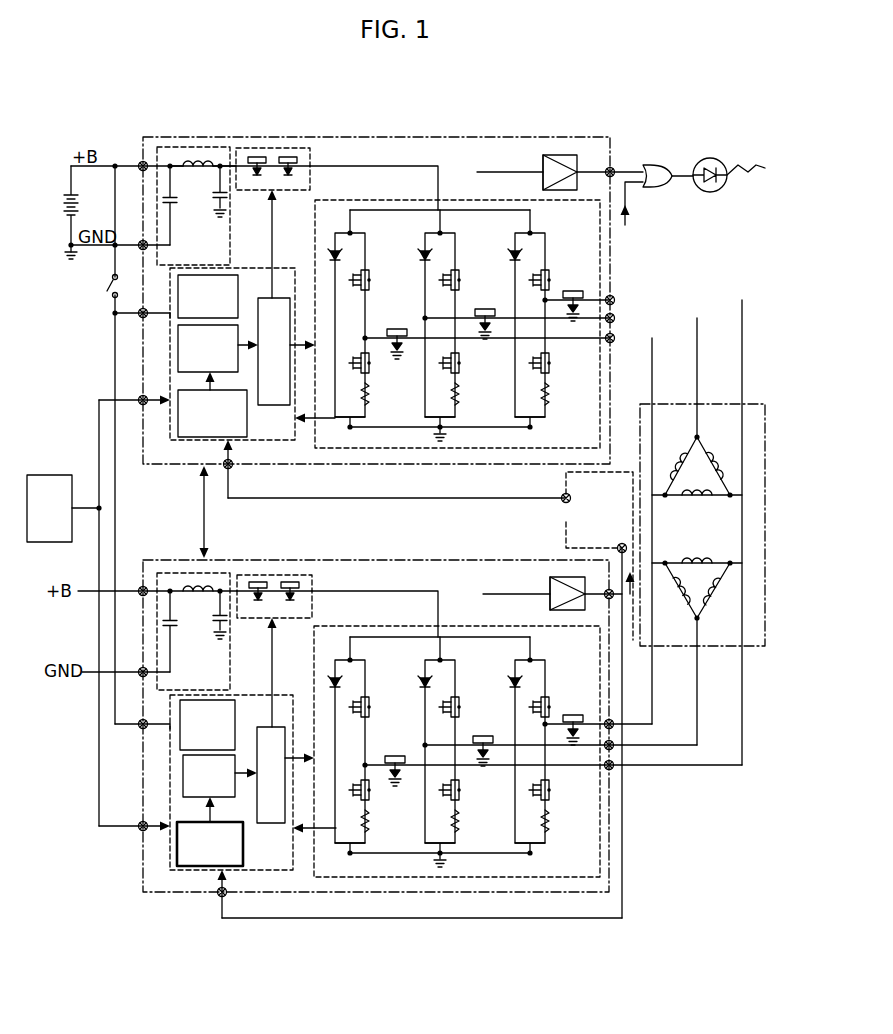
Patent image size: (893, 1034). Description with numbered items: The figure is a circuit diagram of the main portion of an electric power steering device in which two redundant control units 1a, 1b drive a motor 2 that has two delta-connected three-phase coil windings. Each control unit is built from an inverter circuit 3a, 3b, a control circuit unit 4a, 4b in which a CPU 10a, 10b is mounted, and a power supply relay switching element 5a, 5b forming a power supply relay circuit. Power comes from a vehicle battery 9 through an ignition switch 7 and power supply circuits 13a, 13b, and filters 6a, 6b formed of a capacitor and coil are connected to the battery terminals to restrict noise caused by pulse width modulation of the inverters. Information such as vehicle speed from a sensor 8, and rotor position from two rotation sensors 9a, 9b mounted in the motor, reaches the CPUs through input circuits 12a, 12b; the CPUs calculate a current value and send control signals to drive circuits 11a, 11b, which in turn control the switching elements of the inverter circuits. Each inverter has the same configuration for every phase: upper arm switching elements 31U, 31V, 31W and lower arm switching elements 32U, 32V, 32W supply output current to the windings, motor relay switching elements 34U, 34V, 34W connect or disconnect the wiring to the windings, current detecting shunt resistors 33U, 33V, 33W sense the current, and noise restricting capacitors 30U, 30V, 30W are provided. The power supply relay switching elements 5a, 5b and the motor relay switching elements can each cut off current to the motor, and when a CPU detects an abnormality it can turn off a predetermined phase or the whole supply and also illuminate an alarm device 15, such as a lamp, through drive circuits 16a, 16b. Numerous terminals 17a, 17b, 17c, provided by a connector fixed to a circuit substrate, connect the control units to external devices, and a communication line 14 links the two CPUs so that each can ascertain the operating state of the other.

The control unit 1a is at (452, 136).
The control unit 1b is at (498, 893).
The motor 2 is at (718, 403).
The inverter circuit 3a is at (335, 452).
The inverter circuit 3b is at (456, 626).
The control circuit unit 4a is at (198, 353).
The control circuit unit 4b is at (194, 801).
The power supply relay switching element 5a is at (268, 148).
The power supply relay switching element 5b is at (262, 574).
The filter 6a is at (200, 146).
The filter 6b is at (157, 618).
The ignition switch 7 is at (110, 285).
The sensor 8 is at (40, 543).
The battery 9 is at (68, 193).
The rotation sensor 9a is at (566, 472).
The rotation sensor 9b is at (566, 522).
The central processing unit 10a is at (178, 333).
The central processing unit 10b is at (183, 757).
The drive circuit 11a is at (263, 407).
The drive circuit 11b is at (272, 825).
The input circuit 12a is at (175, 428).
The input circuit 12b is at (175, 848).
The power supply circuit 13a is at (237, 266).
The power supply circuit 13b is at (238, 694).
The communication line 14 is at (204, 515).
The alarm device 15 is at (714, 158).
The drive circuit 16a is at (560, 154).
The drive circuit 16b is at (556, 577).
The terminal 17a is at (140, 162).
The terminal 17b is at (138, 832).
The terminal 17c is at (614, 168).
The noise restricting capacitor 30U is at (336, 250).
The noise restricting capacitor 30V is at (438, 222).
The noise restricting capacitor 30W is at (529, 225).
The upper arm switching element 31U is at (340, 258).
The upper arm switching element 31V is at (430, 258).
The upper arm switching element 31W is at (520, 258).
The lower arm switching element 32U is at (368, 392).
The lower arm switching element 32V is at (458, 387).
The lower arm switching element 32W is at (548, 392).
The current detecting shunt resistor 33U is at (352, 420).
The current detecting shunt resistor 33V is at (442, 422).
The current detecting shunt resistor 33W is at (532, 420).
The motor relay switching element 34U is at (397, 328).
The motor relay switching element 34V is at (485, 308).
The motor relay switching element 34W is at (573, 290).